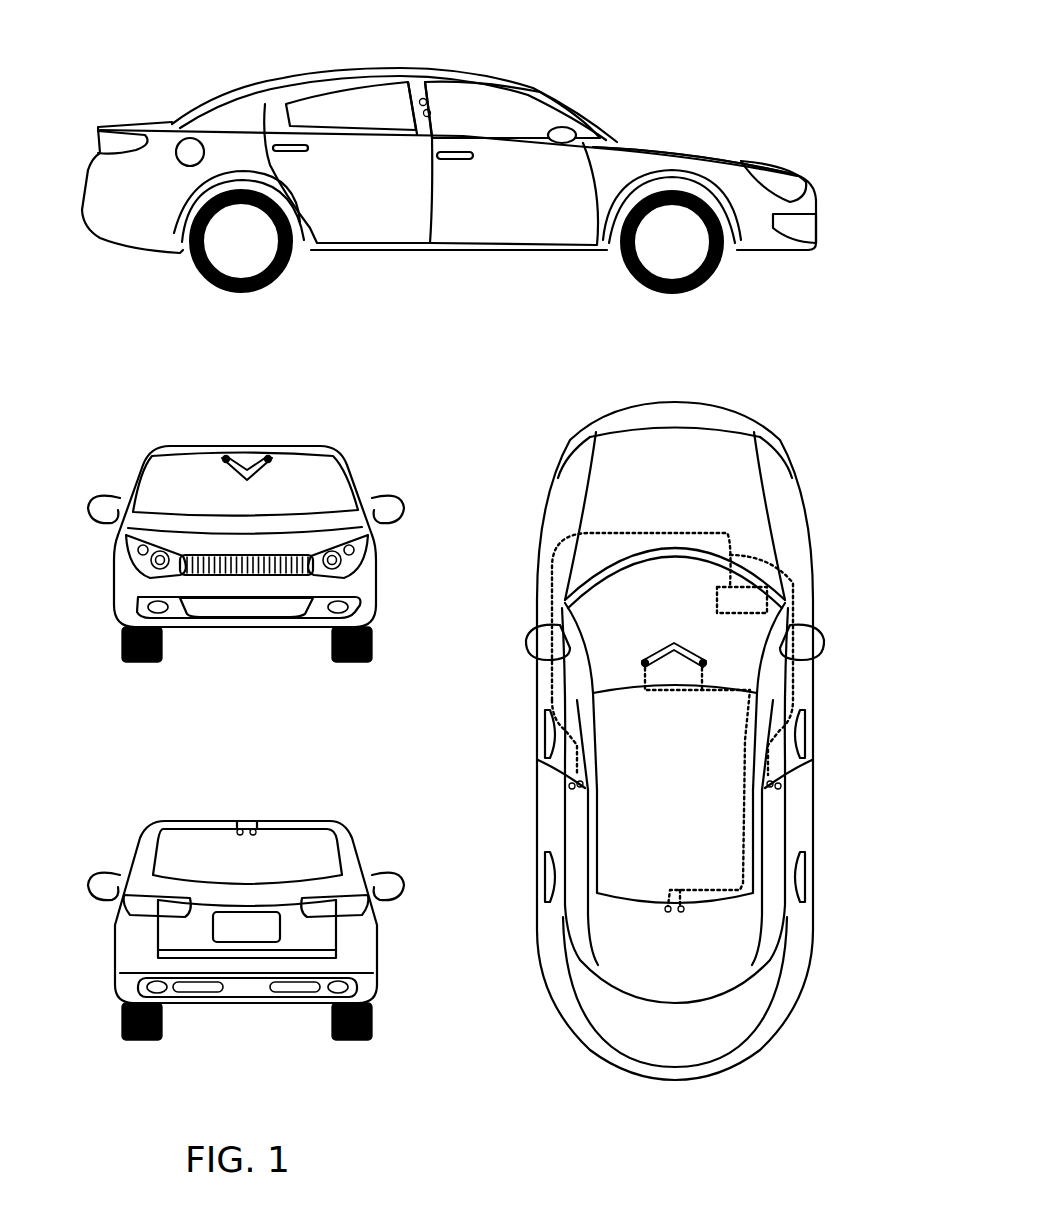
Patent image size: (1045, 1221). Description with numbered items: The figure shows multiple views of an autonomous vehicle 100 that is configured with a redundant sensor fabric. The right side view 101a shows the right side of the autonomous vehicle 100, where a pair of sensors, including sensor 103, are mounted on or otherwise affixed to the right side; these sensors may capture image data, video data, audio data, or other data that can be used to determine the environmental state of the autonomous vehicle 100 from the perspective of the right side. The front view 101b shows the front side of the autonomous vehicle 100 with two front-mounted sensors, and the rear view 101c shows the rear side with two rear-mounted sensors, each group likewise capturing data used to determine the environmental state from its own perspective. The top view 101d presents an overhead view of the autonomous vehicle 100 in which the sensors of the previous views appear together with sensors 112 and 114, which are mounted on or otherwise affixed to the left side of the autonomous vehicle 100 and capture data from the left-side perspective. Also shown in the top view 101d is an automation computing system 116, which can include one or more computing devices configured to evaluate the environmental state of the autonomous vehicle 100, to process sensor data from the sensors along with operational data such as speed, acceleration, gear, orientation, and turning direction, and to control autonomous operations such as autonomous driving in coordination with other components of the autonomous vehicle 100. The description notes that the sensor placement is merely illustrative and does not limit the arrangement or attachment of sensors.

The autonomous vehicle 100 is at (489, 555).
The right side view 101a is at (678, 100).
The front view 101b is at (373, 443).
The rear view 101c is at (343, 823).
The top view 101d is at (818, 487).
The sensor 103 is at (426, 101).
The sensor 112 is at (573, 790).
The sensor 114 is at (580, 788).
The automation computing system 116 is at (748, 588).